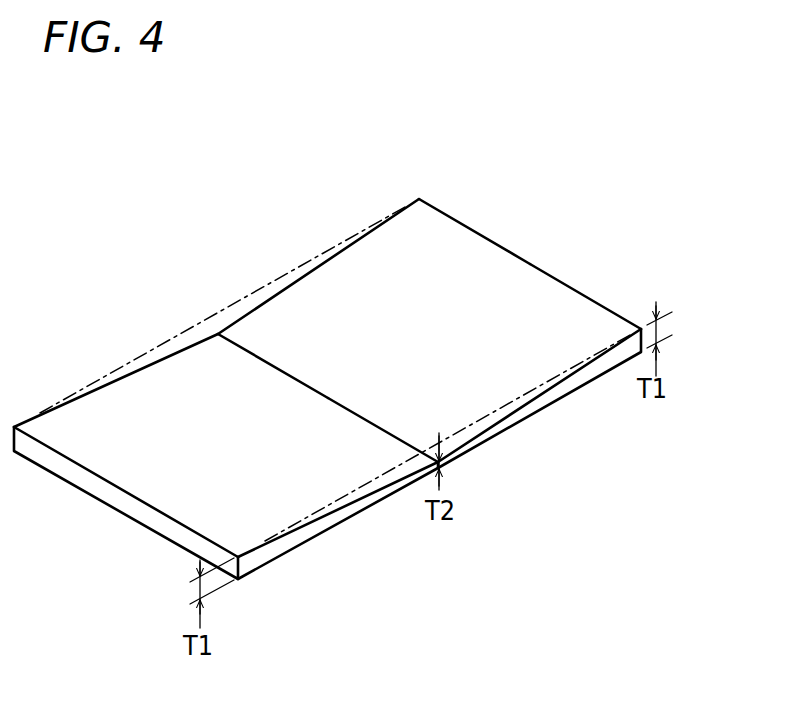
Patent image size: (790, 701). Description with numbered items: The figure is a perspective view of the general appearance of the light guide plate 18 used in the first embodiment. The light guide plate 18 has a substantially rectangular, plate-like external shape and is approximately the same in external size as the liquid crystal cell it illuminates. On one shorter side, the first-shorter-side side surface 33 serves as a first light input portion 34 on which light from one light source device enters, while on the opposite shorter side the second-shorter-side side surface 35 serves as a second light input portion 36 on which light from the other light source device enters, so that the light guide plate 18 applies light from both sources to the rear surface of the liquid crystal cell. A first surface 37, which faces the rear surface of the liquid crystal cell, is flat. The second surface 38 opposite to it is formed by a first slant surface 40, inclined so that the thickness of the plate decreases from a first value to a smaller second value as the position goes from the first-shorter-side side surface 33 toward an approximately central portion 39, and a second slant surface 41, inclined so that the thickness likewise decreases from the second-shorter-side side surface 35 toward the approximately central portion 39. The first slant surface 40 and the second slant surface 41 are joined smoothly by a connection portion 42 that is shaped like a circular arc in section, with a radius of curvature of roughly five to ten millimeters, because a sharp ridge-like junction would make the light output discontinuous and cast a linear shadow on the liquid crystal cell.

The light guide plate 18 is at (182, 254).
The first-shorter-side side surface 33 is at (78, 469).
The first light input portion 34 is at (132, 502).
The second-shorter-side side surface 35 is at (486, 238).
The second light input portion 36 is at (543, 267).
The first surface 37 is at (349, 518).
The second surface 38 is at (218, 360).
The approximately central portion 39 is at (300, 376).
The first slant surface 40 is at (245, 448).
The second slant surface 41 is at (418, 337).
The connection portion 42 is at (342, 400).